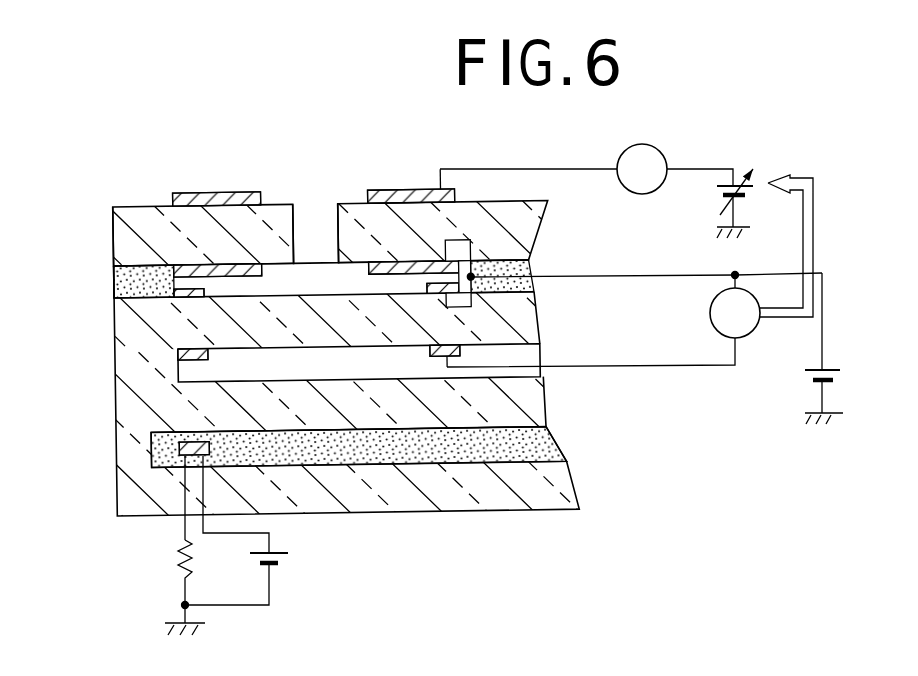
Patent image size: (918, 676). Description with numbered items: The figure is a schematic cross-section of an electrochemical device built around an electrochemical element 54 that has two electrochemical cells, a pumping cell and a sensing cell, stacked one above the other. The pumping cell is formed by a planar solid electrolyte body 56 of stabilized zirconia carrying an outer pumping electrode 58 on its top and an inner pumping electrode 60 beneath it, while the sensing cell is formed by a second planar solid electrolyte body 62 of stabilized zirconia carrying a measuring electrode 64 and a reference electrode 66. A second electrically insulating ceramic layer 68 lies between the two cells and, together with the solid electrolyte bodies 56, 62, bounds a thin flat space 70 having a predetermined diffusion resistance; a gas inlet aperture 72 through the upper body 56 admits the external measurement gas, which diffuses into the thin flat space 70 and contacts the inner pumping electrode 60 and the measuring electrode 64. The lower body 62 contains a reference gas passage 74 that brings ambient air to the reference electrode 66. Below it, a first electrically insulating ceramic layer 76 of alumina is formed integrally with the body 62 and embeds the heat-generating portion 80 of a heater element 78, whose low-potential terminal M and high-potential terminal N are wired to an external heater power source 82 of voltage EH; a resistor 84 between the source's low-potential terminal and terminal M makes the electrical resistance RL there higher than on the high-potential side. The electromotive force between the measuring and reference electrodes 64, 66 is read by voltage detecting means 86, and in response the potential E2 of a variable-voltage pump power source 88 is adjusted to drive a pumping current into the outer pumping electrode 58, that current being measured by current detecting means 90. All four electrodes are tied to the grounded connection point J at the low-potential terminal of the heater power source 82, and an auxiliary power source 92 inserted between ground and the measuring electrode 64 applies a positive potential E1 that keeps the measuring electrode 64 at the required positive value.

The electrochemical element 54 is at (90, 170).
The planar solid electrolyte body 56 is at (115, 236).
The outer pumping electrode 58 is at (209, 197).
The inner pumping electrode 60 is at (247, 267).
The planar solid electrolyte body 62 is at (152, 402).
The measuring electrode 64 is at (176, 295).
The reference electrode 66 is at (178, 359).
The second electrically insulating ceramic layer 68 is at (117, 278).
The thin flat space 70 is at (301, 293).
The gas inlet aperture 72 is at (333, 236).
The reference gas passage 74 is at (530, 355).
The first electrically insulating ceramic layer 76 is at (542, 445).
The heater element 78 is at (209, 434).
The heat-generating portion 80 is at (178, 452).
The heater power source 82 is at (277, 577).
The resistor 84 is at (175, 568).
The voltage detecting means 86 is at (752, 337).
The variable-voltage pump power source 88 is at (713, 195).
The current detecting means 90 is at (658, 150).
The auxiliary power source 92 is at (805, 383).
The low-potential terminal M is at (153, 516).
The high-potential terminal N is at (293, 517).
The connection point J is at (189, 607).
The electrical resistance RL is at (215, 578).
The heater power source potential EH is at (305, 578).
The positive potential E1 is at (852, 356).
The potential E2 is at (769, 158).